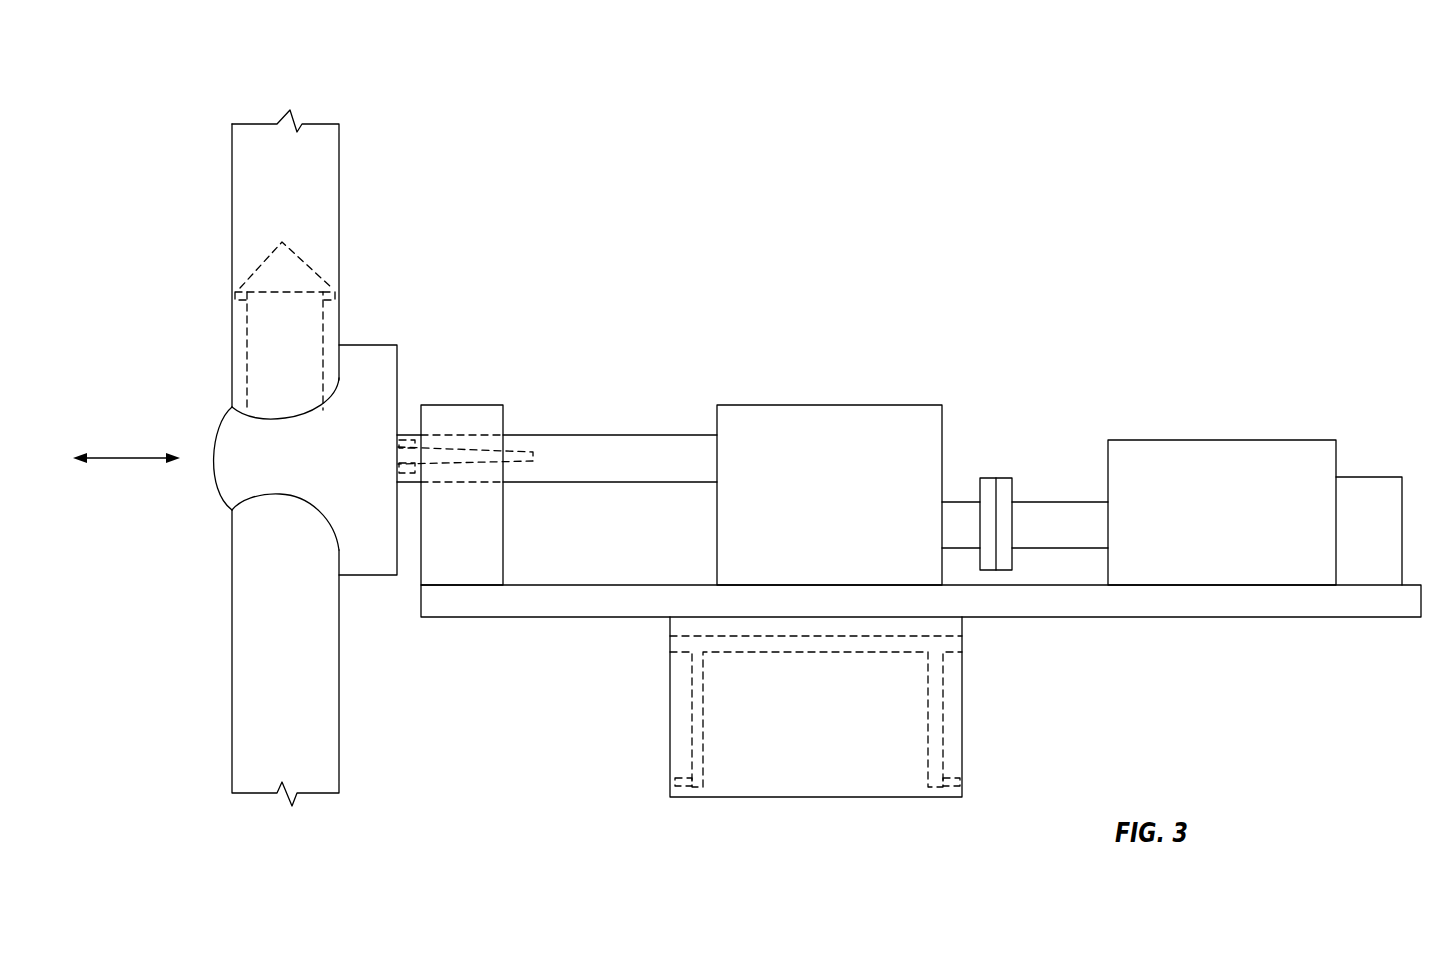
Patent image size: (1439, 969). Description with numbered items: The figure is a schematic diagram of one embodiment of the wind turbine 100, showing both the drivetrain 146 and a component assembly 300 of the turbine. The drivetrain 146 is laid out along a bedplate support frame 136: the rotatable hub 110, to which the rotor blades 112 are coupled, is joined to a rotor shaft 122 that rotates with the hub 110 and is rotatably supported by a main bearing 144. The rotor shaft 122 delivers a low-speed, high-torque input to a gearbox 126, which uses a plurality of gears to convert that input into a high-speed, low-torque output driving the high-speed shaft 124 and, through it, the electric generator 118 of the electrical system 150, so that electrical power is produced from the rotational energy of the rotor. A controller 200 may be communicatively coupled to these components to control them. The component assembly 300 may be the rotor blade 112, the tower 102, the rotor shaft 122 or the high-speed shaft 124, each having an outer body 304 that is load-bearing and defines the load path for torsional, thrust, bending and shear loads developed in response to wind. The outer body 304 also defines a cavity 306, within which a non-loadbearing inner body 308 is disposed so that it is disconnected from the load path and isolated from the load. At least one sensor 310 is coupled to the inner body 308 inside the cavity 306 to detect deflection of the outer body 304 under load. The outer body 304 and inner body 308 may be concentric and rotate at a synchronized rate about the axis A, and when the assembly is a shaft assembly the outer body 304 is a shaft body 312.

The wind turbine 100 is at (1357, 120).
The tower 102 is at (962, 690).
The rotatable hub 110 is at (227, 482).
The rotor blade 112 is at (332, 190).
The electric generator 118 is at (1233, 453).
The rotor shaft 122 is at (684, 443).
The high-speed shaft 124 is at (1035, 470).
The gearbox 126 is at (909, 410).
The bedplate support frame 136 is at (1383, 605).
The main bearing 144 is at (492, 413).
The drivetrain 146 is at (787, 328).
The electrical system 150 is at (1377, 457).
The controller 200 is at (1392, 532).
The component assembly 300 is at (540, 227).
The outer body 304 is at (212, 345).
The cavity 306 is at (327, 328).
The inner body 308 is at (247, 322).
The sensor 310 is at (282, 242).
The shaft body 312 is at (550, 432).
The axis A is at (118, 458).